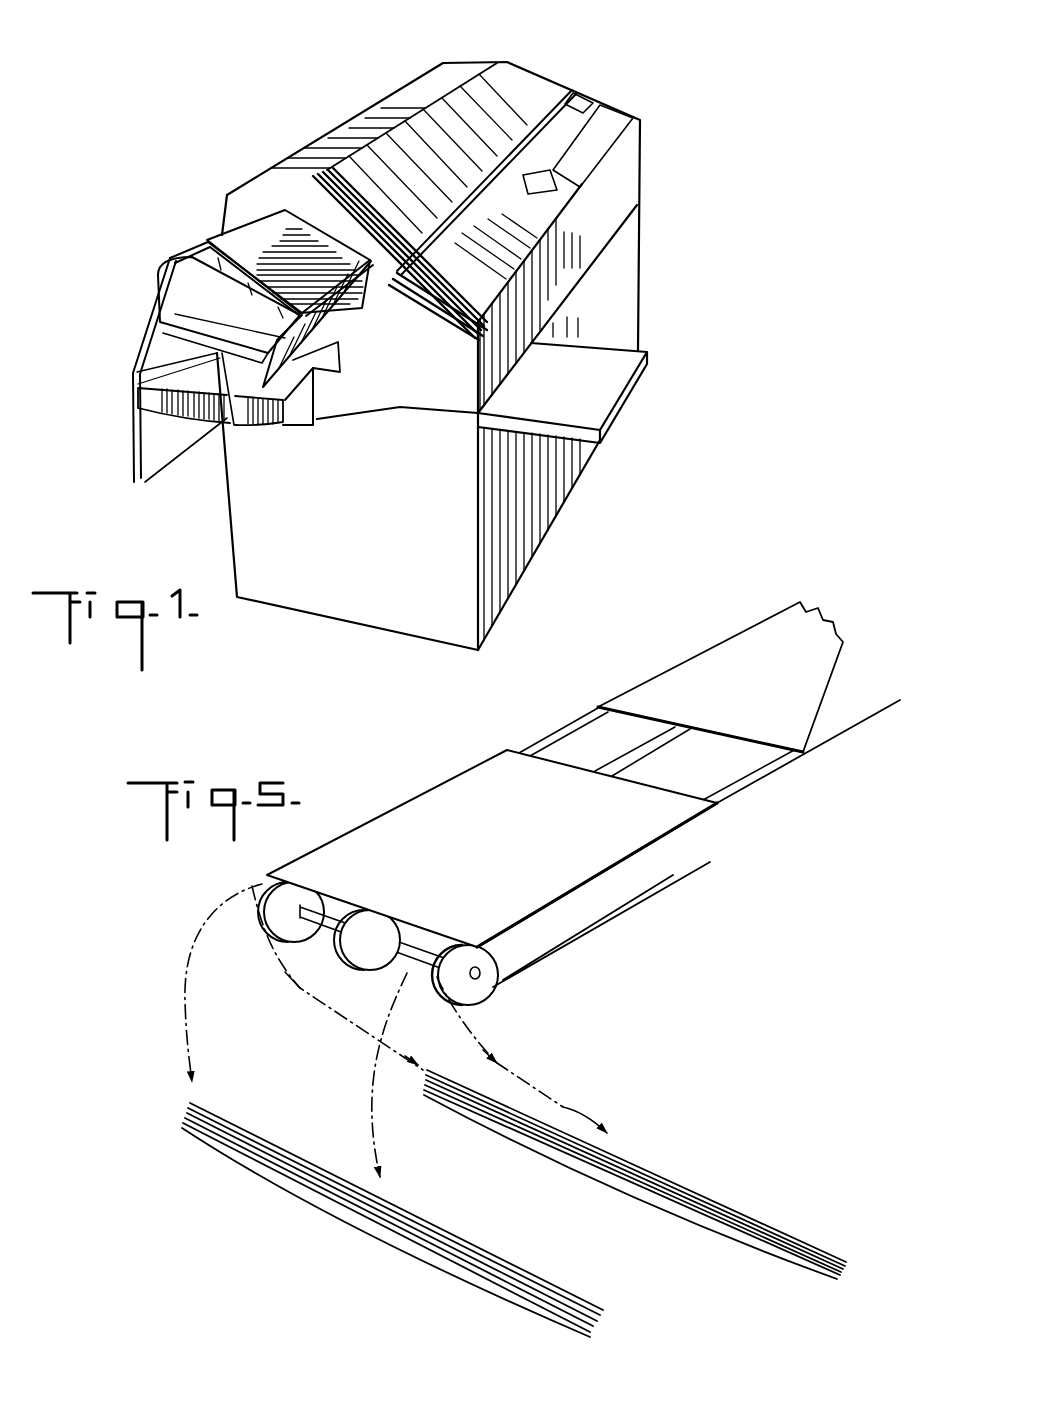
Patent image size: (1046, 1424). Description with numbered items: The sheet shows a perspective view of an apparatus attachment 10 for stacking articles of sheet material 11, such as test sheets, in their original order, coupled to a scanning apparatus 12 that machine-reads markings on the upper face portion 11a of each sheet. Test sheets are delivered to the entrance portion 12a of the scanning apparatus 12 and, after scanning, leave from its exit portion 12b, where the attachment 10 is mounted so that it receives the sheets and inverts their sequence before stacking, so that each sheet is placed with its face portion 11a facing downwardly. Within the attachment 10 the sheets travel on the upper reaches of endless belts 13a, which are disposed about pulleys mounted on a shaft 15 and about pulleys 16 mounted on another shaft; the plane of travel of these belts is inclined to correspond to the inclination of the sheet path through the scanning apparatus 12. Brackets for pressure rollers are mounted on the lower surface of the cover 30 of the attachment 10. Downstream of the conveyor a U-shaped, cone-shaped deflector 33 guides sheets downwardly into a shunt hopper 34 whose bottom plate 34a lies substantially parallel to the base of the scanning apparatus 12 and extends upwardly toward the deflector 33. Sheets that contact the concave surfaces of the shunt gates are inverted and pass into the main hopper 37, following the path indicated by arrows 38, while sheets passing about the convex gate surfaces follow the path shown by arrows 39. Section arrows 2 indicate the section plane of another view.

In FIG. 1, the section line 2 is at (140, 217).
In FIG. 1, the apparatus attachment 10 is at (146, 298).
In FIG. 5, the sheet material 11 is at (845, 742).
In FIG. 5, the face portion 11a is at (760, 632).
In FIG. 1, the scanning apparatus 12 is at (652, 304).
In FIG. 1, the entrance portion 12a is at (530, 88).
In FIG. 1, the exit portion 12b is at (322, 212).
In FIG. 1, the endless belts 13a is at (205, 242).
In FIG. 5, the endless belts 13a is at (565, 732).
In FIG. 5, the shaft 15 is at (405, 953).
In FIG. 5, the pulleys 16 is at (485, 983).
In FIG. 1, the cover 30 is at (255, 237).
In FIG. 1, the U-shaped deflector 33 is at (175, 314).
In FIG. 1, the shunt hopper 34 is at (216, 432).
In FIG. 1, the bottom plate 34a is at (252, 428).
In FIG. 1, the main hopper 37 is at (321, 418).
In FIG. 5, the arrows 38 is at (565, 1110).
In FIG. 5, the arrows 39 is at (182, 990).